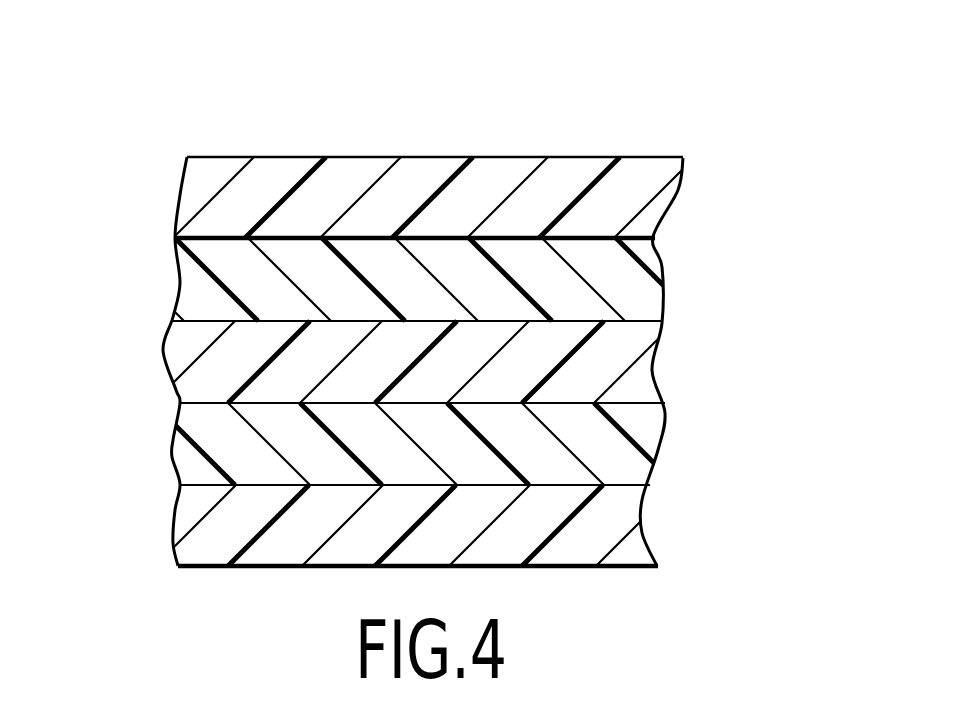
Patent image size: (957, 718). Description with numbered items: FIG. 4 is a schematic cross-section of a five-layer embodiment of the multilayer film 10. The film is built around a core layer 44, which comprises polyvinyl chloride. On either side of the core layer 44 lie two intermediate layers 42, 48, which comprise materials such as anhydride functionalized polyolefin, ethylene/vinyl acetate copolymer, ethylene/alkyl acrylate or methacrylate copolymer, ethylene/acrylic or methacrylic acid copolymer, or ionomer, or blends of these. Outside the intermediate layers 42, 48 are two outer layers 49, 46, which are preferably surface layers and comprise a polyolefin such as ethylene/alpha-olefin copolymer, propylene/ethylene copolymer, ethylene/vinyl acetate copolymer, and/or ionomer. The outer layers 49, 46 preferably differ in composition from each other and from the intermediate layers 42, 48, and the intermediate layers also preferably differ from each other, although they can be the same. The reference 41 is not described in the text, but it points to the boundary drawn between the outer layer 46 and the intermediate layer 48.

The multilayer film 10 is at (521, 109).
The interface between layers 41 is at (173, 238).
The intermediate layer 42 is at (612, 447).
The core layer 44 is at (612, 363).
The outer layer 46 is at (612, 198).
The intermediate layer 48 is at (612, 282).
The outer layer 49 is at (612, 530).